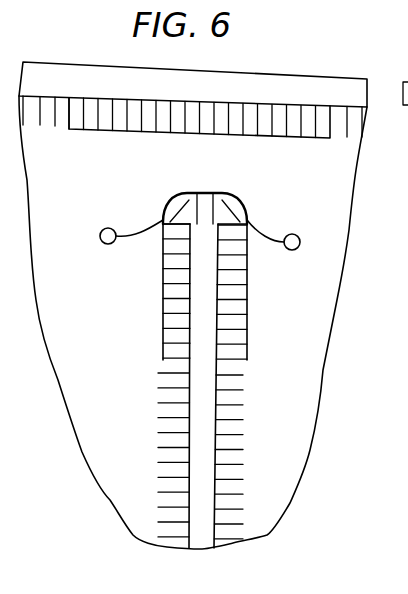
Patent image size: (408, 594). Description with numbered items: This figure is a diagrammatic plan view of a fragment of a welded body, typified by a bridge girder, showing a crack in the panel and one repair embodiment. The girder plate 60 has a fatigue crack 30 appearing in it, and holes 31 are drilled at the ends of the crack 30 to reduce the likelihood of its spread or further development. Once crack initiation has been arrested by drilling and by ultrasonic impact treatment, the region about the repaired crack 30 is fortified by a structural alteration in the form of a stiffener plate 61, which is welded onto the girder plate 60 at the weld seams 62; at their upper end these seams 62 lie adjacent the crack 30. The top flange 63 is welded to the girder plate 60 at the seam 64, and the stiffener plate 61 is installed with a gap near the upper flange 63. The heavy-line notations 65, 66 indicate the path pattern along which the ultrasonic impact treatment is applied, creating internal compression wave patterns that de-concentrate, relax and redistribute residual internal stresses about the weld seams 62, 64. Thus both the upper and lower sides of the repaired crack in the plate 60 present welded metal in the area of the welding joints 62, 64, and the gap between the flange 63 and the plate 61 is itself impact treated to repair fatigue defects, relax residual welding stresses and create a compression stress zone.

The fatigue crack 30 is at (138, 228).
The holes 31 is at (104, 226).
The girder plate 60 is at (110, 348).
The stiffener plate 61 is at (203, 533).
The weld seams 62 is at (235, 403).
The top flange 63 is at (233, 89).
The weld seam 64 is at (312, 115).
The ultrasonic impact treatment path pattern 65 is at (107, 97).
The ultrasonic impact treatment path pattern 66 is at (247, 313).